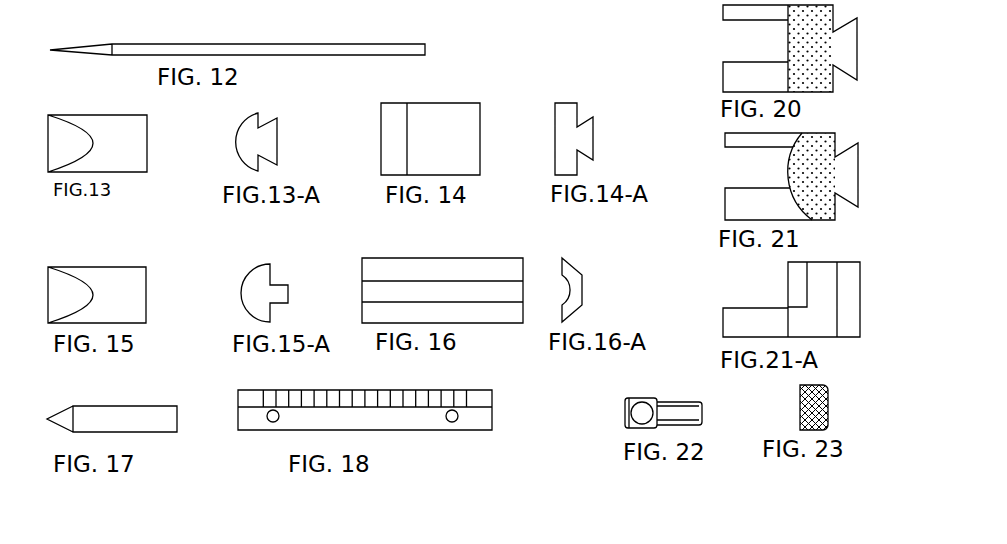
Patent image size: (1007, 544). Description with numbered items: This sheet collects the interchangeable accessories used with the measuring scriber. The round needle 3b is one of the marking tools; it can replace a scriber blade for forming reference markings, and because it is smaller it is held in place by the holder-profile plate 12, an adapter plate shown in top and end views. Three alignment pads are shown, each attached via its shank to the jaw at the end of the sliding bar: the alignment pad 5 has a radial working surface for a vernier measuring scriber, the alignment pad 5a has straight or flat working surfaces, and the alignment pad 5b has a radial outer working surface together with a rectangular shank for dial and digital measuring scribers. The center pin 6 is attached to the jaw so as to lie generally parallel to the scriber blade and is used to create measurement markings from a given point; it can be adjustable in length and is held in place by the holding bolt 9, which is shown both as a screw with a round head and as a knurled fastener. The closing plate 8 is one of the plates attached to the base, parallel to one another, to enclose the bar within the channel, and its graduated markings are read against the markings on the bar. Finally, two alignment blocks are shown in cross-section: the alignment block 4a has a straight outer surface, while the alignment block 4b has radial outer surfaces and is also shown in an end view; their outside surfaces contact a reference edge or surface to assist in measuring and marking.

In FIG. 12, the round needle 3b is at (357, 50).
In FIG. 13, the alignment pad 5 is at (128, 138).
In FIG. 13A, the alignment pad 5 is at (240, 162).
In FIG. 14, the alignment pad 5a is at (435, 113).
In FIG. 14A, the alignment pad 5a is at (558, 115).
In FIG. 15, the alignment pad 5b is at (112, 273).
In FIG. 15A, the alignment pad 5b is at (258, 295).
In FIG. 16, the holder-profile plate 12 is at (378, 268).
In FIG. 16A, the holder-profile plate 12 is at (585, 268).
In FIG. 17, the center pin 6 is at (83, 420).
In FIG. 18, the closing plate 8 is at (472, 425).
In FIG. 20, the alignment block 4a is at (747, 77).
In FIG. 21, the alignment block 4b is at (742, 207).
In FIG. 21A, the alignment block 4b is at (770, 322).
In FIG. 22, the holding bolt 9 is at (622, 407).
In FIG. 23, the holding bolt 9 is at (800, 407).